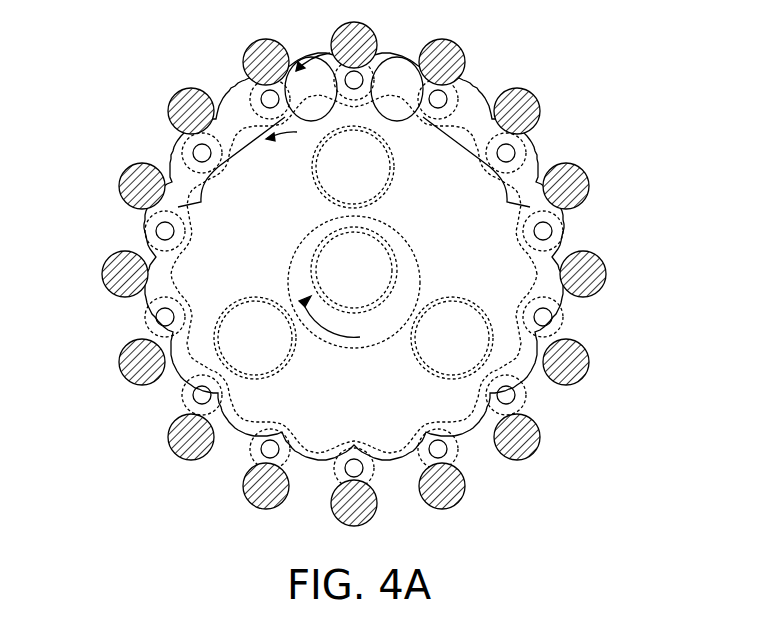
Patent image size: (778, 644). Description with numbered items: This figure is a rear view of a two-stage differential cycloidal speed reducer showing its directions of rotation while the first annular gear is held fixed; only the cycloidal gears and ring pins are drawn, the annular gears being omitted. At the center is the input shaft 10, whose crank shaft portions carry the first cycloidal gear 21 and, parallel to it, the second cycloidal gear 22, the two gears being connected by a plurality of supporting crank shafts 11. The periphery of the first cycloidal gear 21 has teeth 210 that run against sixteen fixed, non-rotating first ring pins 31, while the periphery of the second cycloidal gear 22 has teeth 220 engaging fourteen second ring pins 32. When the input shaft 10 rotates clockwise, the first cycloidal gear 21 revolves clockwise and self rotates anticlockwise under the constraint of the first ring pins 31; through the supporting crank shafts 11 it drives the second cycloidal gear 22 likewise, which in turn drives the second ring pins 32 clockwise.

The input shaft 10 is at (330, 263).
The supporting crank shafts 11 is at (367, 160).
The first cycloidal gear 21 is at (216, 198).
The second cycloidal gear 22 is at (165, 186).
The first ring pins 31 is at (252, 44).
The second ring pins 32 is at (250, 88).
The teeth 210 is at (476, 86).
The teeth 220 is at (158, 384).